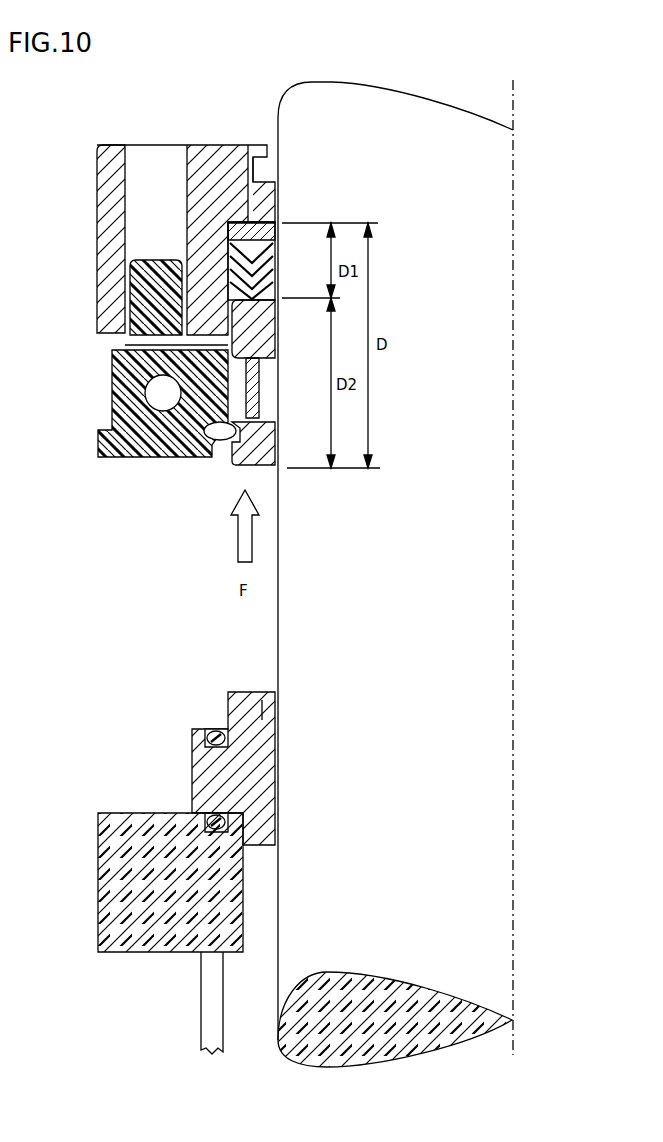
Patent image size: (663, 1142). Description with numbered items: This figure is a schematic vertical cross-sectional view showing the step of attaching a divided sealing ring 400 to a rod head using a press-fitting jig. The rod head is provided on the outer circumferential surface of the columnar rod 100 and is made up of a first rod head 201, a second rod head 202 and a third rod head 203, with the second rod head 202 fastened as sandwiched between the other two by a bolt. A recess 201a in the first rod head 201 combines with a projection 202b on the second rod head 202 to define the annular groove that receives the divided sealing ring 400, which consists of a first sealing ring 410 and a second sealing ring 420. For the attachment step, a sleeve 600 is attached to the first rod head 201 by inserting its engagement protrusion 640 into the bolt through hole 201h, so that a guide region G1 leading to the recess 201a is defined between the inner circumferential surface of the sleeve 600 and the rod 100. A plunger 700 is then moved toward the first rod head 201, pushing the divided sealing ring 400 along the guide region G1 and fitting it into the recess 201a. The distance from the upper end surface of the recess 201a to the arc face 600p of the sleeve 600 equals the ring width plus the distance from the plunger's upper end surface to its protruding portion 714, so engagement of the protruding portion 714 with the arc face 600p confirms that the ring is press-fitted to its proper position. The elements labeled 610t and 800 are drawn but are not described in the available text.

The rod 100 is at (395, 122).
The first rod head 201 is at (213, 162).
The recess 201a is at (255, 143).
The bolt through hole 201h is at (122, 215).
The engagement protrusion 640 is at (150, 289).
The sleeve 600 is at (100, 441).
The arc face 600p is at (208, 438).
The holder groove 610t is at (235, 370).
The divided sealing ring 400 is at (421, 261).
The first sealing ring 410 is at (282, 240).
The second sealing ring 420 is at (282, 277).
The plunger 700 is at (282, 328).
The spacer 800 is at (282, 392).
The protruding portion 714 is at (219, 448).
The guide region G1 is at (278, 407).
The second rod head 202 is at (210, 771).
The projection 202b is at (262, 708).
The third rod head 203 is at (110, 876).